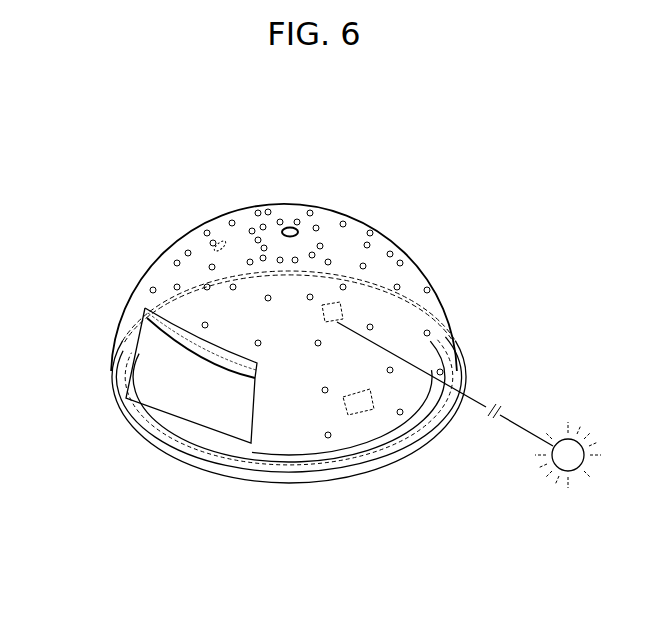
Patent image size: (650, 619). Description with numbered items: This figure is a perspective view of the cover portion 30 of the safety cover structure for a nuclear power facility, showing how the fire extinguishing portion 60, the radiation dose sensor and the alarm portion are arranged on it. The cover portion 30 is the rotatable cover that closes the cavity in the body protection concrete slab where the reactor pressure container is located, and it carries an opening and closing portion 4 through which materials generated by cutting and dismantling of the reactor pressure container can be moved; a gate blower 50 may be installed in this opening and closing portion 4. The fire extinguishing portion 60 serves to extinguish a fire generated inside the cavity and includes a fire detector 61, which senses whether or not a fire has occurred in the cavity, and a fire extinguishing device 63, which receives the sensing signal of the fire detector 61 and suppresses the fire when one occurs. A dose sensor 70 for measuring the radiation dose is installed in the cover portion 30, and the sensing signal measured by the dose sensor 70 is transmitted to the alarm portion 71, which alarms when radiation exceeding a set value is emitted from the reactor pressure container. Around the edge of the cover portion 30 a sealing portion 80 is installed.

The opening and closing portion 4 is at (163, 390).
The cover portion 30 is at (365, 220).
The gate blower 50 is at (143, 305).
The fire extinguishing portion 60 is at (361, 483).
The fire detector 61 is at (362, 415).
The fire extinguishing device 63 is at (315, 212).
The dose sensor 70 is at (342, 304).
The alarm portion 71 is at (561, 437).
The sealing portion 80 is at (112, 376).